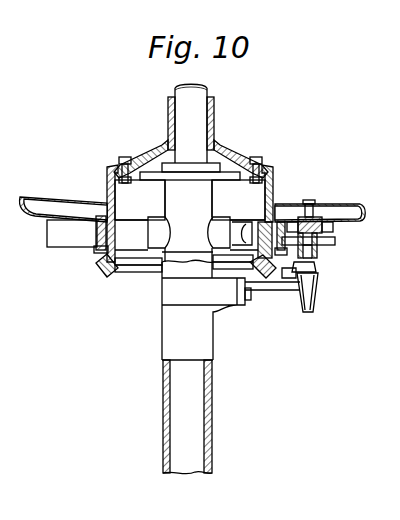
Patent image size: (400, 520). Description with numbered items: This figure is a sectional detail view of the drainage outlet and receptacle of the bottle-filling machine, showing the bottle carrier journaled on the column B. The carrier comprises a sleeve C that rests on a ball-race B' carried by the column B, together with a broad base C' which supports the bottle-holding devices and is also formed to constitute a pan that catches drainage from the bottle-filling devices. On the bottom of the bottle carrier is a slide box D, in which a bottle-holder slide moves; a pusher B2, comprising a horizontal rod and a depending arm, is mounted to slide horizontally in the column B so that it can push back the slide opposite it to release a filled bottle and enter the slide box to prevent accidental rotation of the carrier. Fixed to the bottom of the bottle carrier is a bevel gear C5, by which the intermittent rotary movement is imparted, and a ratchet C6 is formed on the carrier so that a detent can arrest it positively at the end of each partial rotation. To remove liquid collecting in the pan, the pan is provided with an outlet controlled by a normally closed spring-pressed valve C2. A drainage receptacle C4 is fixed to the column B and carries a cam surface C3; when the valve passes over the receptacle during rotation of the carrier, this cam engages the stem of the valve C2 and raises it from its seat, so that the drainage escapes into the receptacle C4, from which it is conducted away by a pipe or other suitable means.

The sleeve C is at (200, 123).
The ball-race B' is at (191, 157).
The broad base C' is at (193, 201).
The pusher B2 is at (239, 232).
The slide box D is at (65, 238).
The bevel gear C5 is at (103, 270).
The ratchet C6 is at (125, 271).
The spring-pressed valve C2 is at (318, 254).
The cam surface C3 is at (318, 267).
The drainage receptacle C4 is at (318, 300).
The column B is at (200, 417).